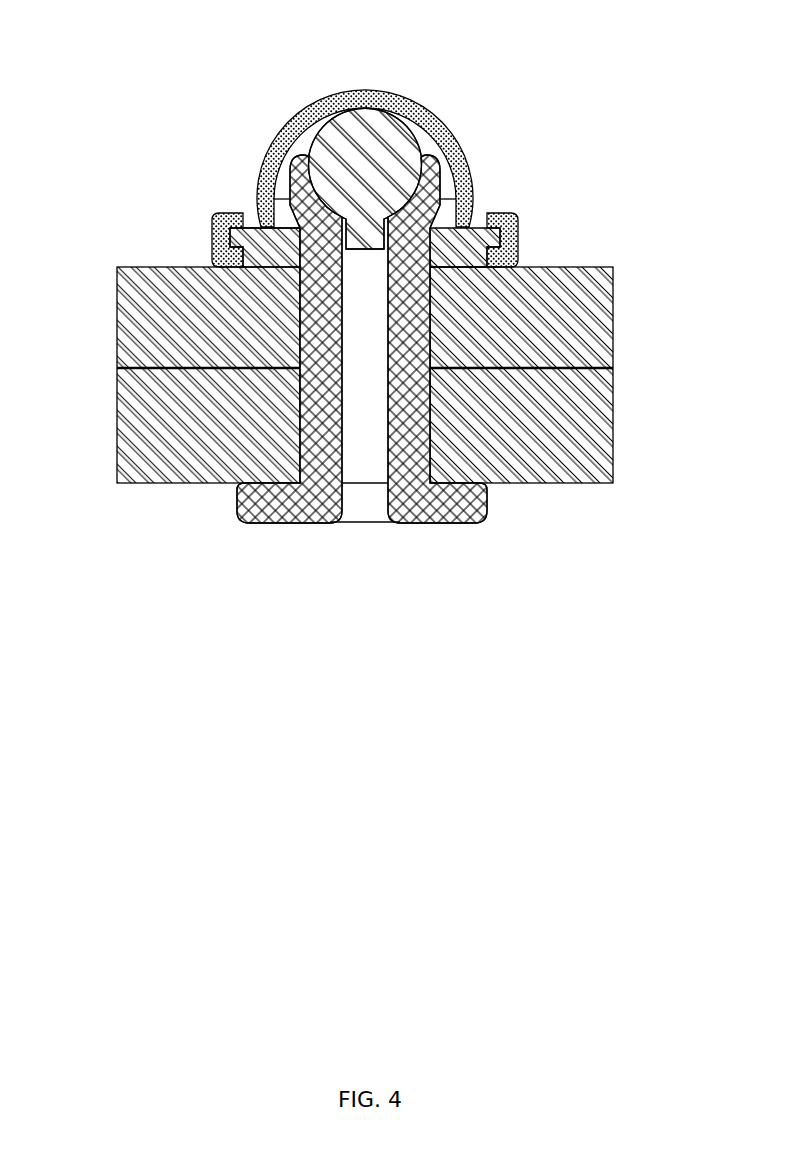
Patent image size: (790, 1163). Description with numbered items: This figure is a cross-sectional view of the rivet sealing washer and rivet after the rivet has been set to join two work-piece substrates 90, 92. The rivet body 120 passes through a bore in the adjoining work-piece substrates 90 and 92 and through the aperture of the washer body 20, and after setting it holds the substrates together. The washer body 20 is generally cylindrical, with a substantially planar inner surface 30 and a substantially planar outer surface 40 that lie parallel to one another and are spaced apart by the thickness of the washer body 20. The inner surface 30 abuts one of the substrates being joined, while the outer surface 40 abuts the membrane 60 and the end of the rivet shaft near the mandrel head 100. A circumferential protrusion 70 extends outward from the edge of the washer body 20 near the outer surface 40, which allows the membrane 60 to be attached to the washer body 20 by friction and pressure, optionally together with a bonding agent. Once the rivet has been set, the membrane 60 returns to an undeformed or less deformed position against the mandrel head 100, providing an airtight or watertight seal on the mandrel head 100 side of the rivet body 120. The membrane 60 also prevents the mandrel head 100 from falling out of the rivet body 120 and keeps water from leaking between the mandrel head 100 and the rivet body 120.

The washer body 20 is at (447, 235).
The inner surface 30 is at (465, 270).
The outer surface 40 is at (270, 227).
The membrane 60 is at (438, 120).
The circumferential protrusion 70 is at (235, 233).
The work-piece substrate 90 is at (130, 483).
The work-piece substrate 92 is at (607, 312).
The mandrel head 100 is at (372, 137).
The rivet body 120 is at (430, 502).